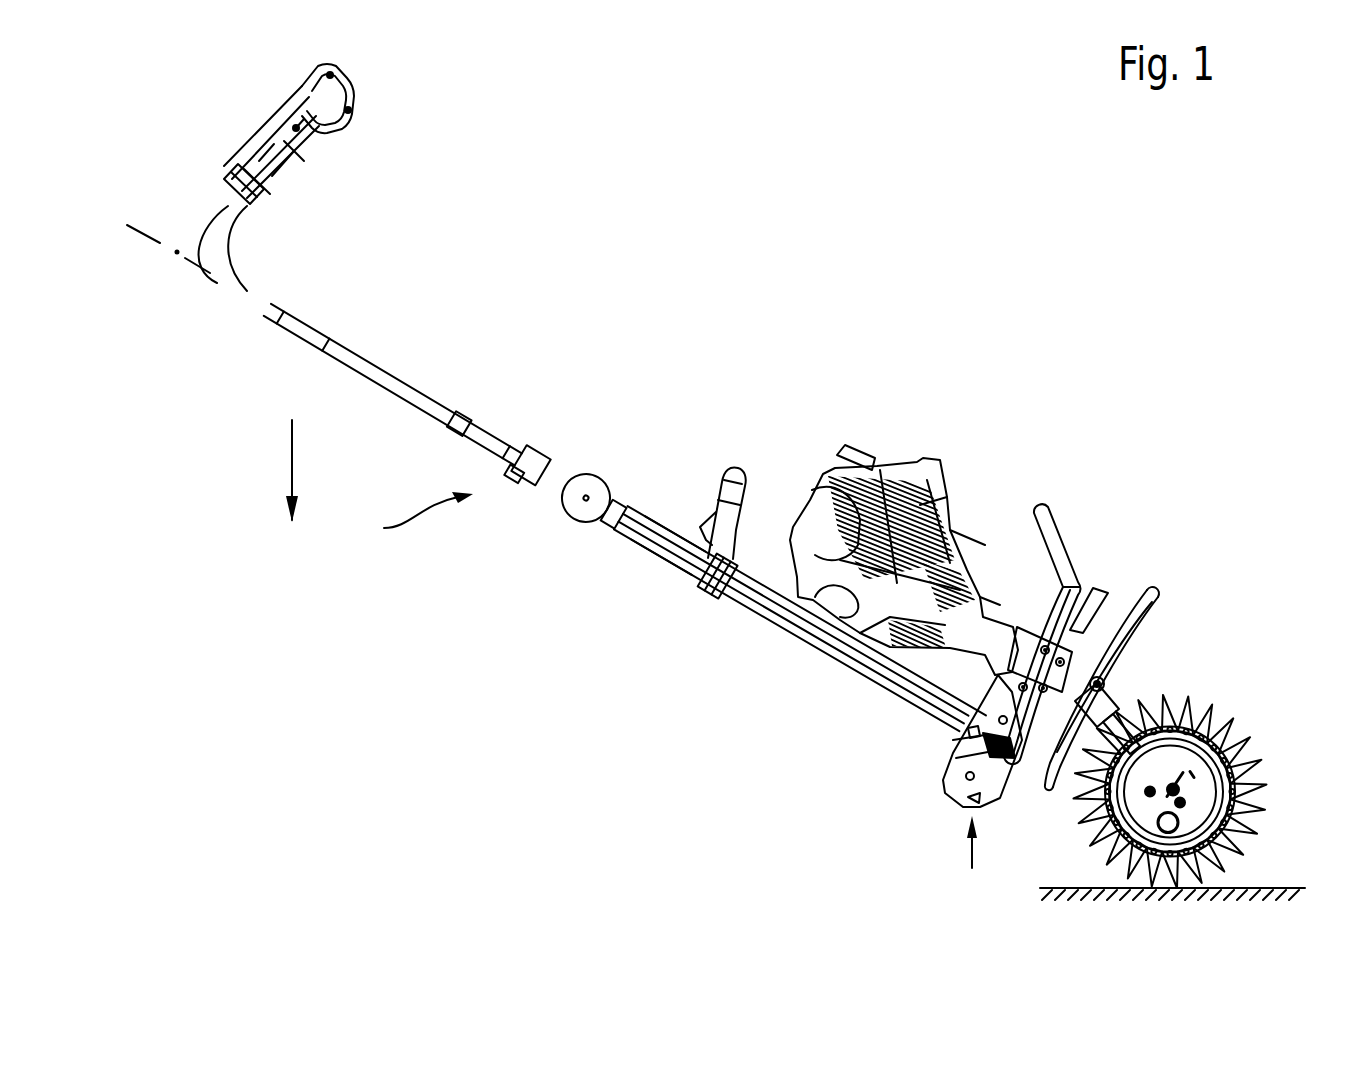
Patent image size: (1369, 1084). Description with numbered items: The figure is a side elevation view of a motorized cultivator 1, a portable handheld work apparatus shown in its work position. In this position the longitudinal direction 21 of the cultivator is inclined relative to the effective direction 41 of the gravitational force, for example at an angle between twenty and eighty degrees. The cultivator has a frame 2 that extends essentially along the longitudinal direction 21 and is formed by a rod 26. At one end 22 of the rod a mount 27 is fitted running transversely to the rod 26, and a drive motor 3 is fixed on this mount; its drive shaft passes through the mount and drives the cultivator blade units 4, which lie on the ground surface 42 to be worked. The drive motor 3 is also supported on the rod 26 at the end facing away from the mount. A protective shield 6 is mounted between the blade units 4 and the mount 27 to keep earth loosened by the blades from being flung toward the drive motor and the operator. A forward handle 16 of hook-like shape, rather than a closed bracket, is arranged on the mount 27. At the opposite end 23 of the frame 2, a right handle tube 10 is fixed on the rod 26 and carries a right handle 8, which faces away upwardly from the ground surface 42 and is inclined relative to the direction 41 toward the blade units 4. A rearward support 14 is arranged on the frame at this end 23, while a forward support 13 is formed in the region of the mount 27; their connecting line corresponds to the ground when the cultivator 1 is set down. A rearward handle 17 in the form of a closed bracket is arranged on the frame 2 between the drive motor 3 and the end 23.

The motorized cultivator 1 is at (903, 272).
The frame 2 is at (803, 648).
The drive motor 3 is at (890, 462).
The cultivator blade units 4 is at (1203, 693).
The protective shield 6 is at (1150, 592).
The right handle 8 is at (317, 140).
The right handle tube 10 is at (325, 333).
The forward support 13 is at (948, 797).
The rearward support 14 is at (527, 497).
The forward handle 16 is at (1045, 510).
The rearward handle 17 is at (732, 468).
The longitudinal direction 21 is at (160, 243).
The end 22 is at (979, 862).
The end 23 is at (410, 521).
The rod 26 is at (648, 520).
The mount 27 is at (1083, 655).
The effective direction of the gravitational force 41 is at (292, 448).
The ground surface 42 is at (1288, 886).